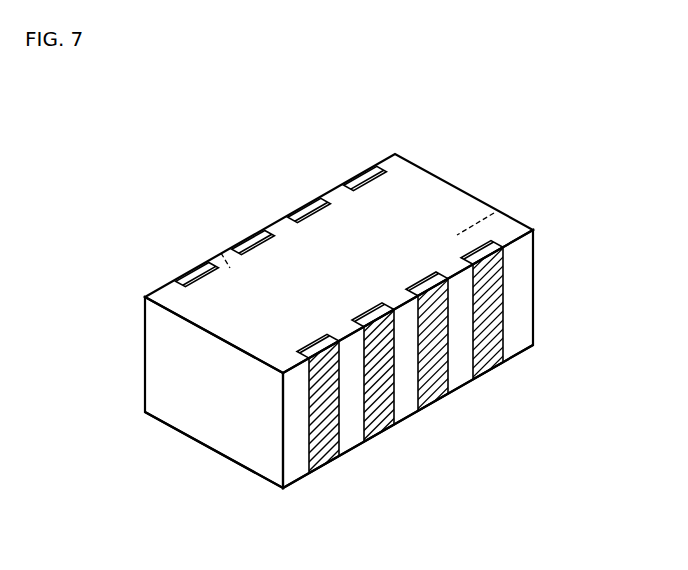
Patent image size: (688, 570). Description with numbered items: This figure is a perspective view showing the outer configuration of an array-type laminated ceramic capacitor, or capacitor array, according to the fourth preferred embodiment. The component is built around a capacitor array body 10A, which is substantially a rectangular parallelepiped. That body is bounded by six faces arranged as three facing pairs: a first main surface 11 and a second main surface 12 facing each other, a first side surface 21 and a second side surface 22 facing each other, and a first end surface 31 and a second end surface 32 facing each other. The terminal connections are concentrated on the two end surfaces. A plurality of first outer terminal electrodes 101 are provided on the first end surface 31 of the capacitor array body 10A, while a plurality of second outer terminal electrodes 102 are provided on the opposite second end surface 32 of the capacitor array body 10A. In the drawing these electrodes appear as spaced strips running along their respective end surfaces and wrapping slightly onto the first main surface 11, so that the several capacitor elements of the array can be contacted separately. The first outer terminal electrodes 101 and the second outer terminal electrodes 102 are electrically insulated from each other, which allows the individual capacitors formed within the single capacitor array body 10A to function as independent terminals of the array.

The capacitor array body 10A is at (428, 170).
The first main surface 11 is at (437, 210).
The second main surface 12 is at (237, 465).
The first side surface 21 is at (195, 420).
The second side surface 22 is at (500, 210).
The first end surface 31 is at (221, 253).
The second end surface 32 is at (403, 410).
The first outer terminal electrodes 101 is at (303, 208).
The second outer terminal electrodes 102 is at (495, 363).